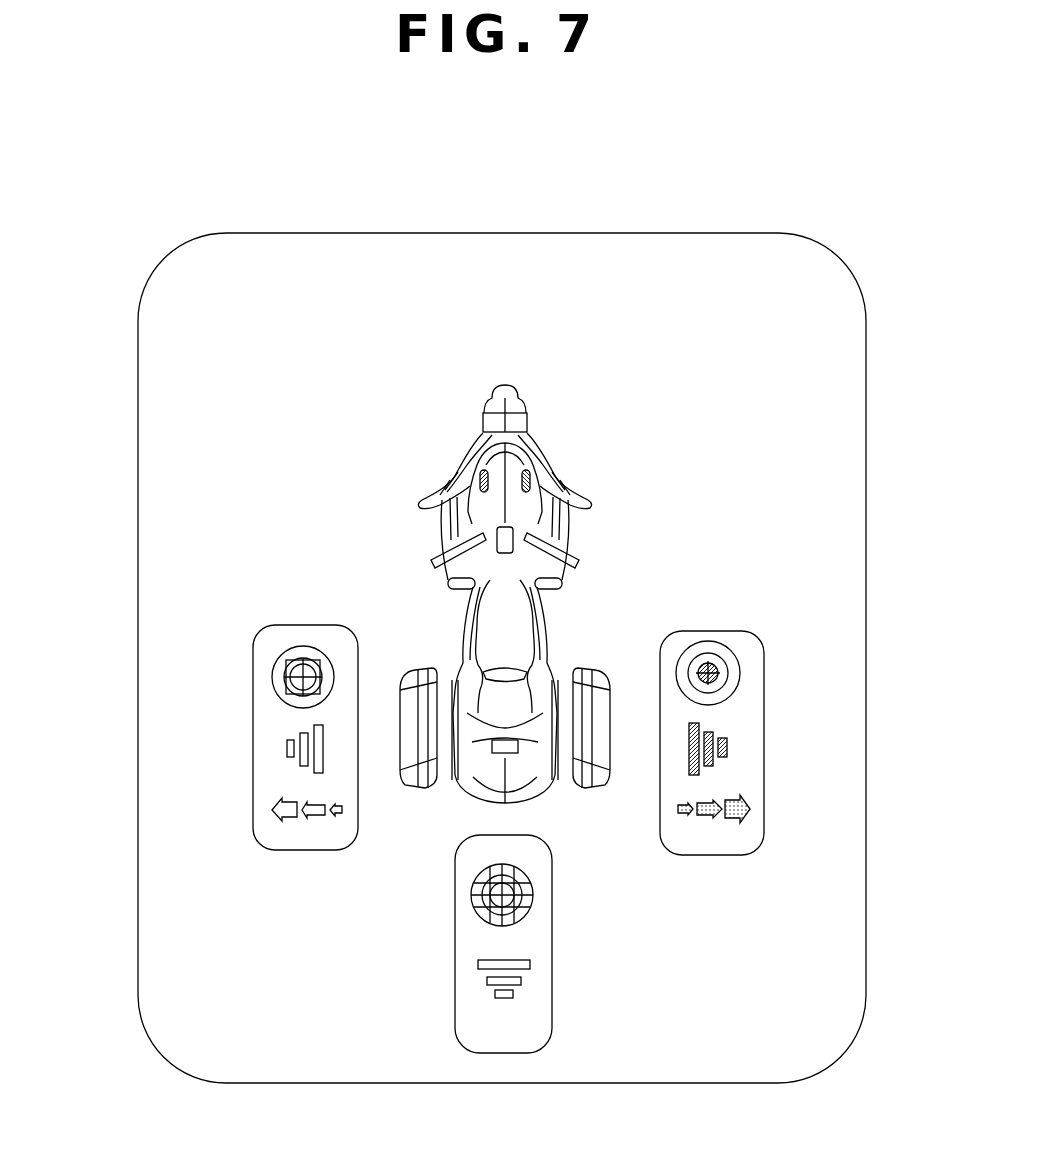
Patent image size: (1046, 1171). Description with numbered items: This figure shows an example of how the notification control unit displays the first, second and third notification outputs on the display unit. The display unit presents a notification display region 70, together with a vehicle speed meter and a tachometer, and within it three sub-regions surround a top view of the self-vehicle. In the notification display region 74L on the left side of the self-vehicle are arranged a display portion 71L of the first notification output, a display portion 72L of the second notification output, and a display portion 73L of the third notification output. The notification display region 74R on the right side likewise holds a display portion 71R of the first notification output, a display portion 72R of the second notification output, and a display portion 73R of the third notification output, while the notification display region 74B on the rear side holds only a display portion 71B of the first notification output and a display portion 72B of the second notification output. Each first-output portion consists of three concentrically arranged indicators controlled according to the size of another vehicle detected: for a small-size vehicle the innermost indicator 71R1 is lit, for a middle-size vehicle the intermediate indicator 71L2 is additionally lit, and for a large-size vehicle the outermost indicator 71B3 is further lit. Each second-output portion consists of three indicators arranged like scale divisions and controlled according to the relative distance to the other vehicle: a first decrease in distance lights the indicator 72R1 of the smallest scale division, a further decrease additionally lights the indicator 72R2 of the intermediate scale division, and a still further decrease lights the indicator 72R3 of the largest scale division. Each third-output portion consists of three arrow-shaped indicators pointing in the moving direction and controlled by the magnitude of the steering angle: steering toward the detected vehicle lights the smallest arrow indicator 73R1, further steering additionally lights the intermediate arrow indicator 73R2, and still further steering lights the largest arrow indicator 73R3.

The notification display region 70 is at (138, 472).
The notification display region on the left side 74L is at (253, 657).
The display portion of first notification output 71L is at (280, 633).
The intermediate indicator 71L2 is at (285, 668).
The display portion of second notification output 72L is at (276, 747).
The display portion of third notification output 73L is at (267, 819).
The notification display region on the right side 74R is at (765, 688).
The display portion of first notification output 71R is at (759, 637).
The innermost indicator 71R1 is at (718, 668).
The display portion of second notification output 72R is at (717, 780).
The indicator of the smallest scale division 72R1 is at (731, 737).
The indicator of the intermediate scale division 72R2 is at (715, 767).
The indicator of the largest scale division 72R3 is at (697, 775).
The display portion of third notification output 73R is at (748, 874).
The indicator of the smallest arrow 73R1 is at (685, 818).
The indicator of the intermediate arrow 73R2 is at (708, 818).
The indicator of the largest arrow 73R3 is at (733, 818).
The notification display region on the rear side 74B is at (497, 1053).
The display portion of first notification output 71B is at (506, 912).
The outermost indicator 71B3 is at (532, 902).
The display portion of second notification output 72B is at (471, 965).